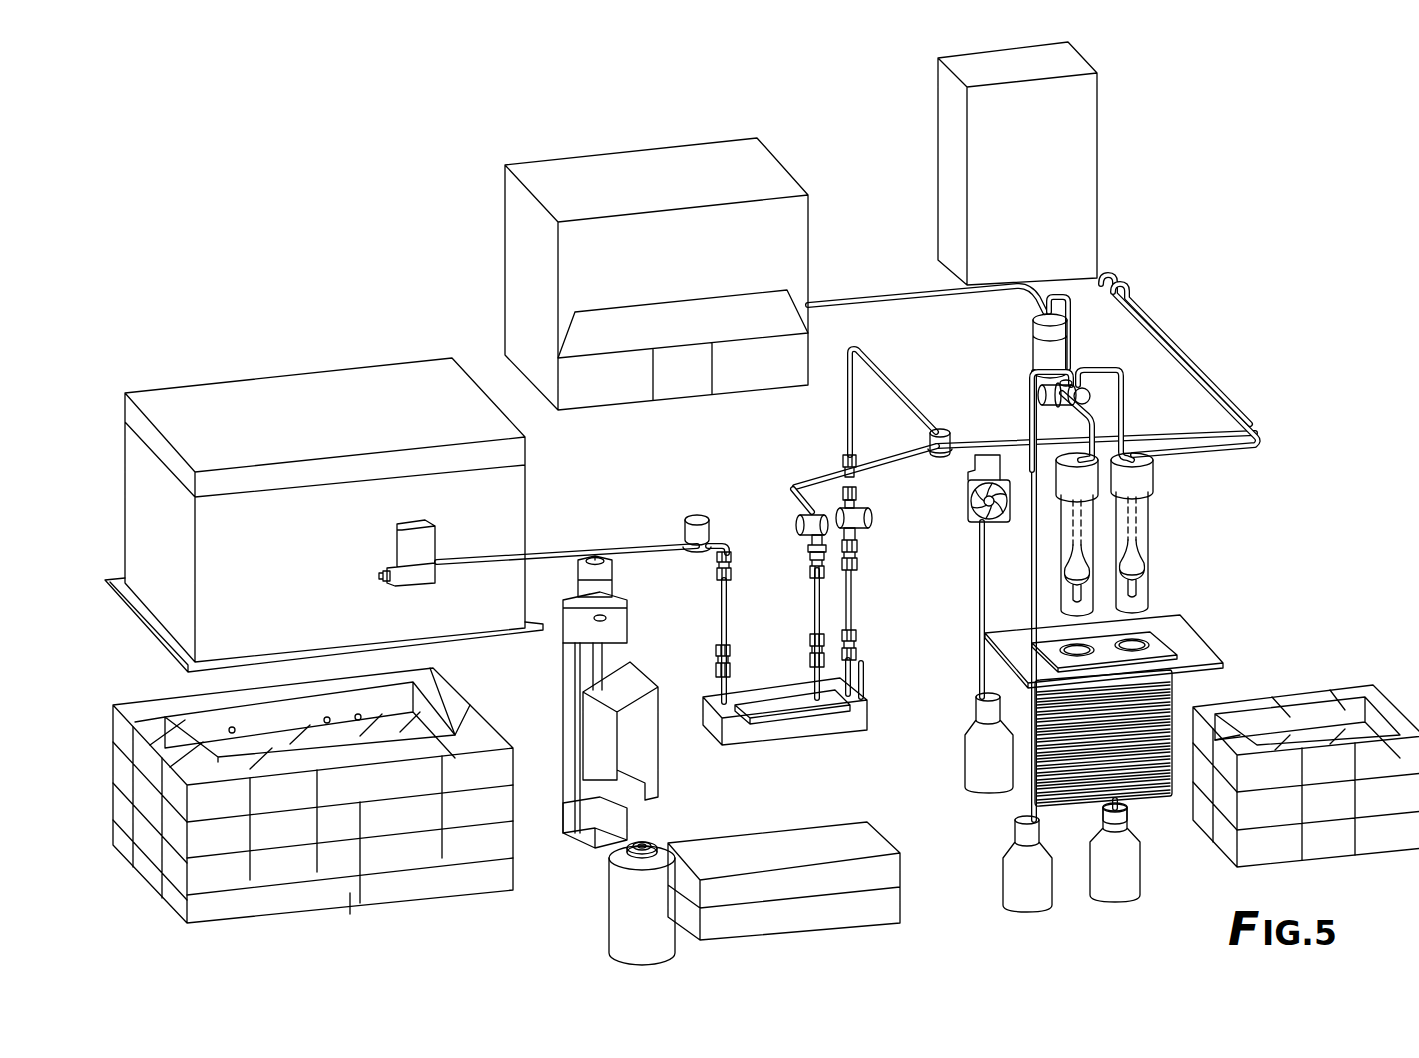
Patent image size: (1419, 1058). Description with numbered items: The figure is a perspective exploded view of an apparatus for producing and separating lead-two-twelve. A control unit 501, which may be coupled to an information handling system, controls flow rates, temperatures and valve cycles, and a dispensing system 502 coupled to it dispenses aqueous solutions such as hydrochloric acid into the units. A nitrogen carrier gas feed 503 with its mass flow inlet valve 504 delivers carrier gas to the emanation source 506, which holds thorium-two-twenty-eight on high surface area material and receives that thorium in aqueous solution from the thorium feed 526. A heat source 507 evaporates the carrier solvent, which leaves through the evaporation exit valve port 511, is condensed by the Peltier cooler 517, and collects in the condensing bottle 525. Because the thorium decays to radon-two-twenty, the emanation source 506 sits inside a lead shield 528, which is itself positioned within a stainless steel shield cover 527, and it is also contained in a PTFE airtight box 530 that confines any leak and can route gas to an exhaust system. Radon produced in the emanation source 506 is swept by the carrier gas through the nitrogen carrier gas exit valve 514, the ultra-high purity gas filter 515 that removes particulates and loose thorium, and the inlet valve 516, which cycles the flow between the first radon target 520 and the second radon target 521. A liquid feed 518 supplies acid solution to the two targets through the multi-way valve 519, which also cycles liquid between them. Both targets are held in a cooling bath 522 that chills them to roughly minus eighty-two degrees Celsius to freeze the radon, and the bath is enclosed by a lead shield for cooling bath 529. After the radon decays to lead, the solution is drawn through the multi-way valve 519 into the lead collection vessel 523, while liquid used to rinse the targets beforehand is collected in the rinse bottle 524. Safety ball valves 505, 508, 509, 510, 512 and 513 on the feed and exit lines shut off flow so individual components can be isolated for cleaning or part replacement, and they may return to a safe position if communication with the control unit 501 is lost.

The control unit 501 is at (522, 250).
The dispensing system 502 is at (1093, 95).
The N2 carrier gas feed 503 is at (430, 547).
The mass flow inlet valve 504 is at (685, 527).
The safety ball valve 505 is at (703, 572).
The emanation source 506 is at (778, 717).
The heat source 507 is at (777, 750).
The safety ball valve 508 is at (803, 645).
The safety ball valve 509 is at (807, 558).
The safety ball valve 510 is at (707, 655).
The evaporation exit valve port 511 is at (793, 537).
The safety ball valve 512 is at (833, 672).
The safety ball valve 513 is at (867, 567).
The N2 carrier gas exit valve 514 is at (860, 512).
The ultra-high purity gas filter 515 is at (837, 492).
The inlet valve 516 is at (953, 430).
The Peltier cooler 517 is at (965, 512).
The liquid feed 518 is at (1033, 367).
The multi-way valve 519 is at (1047, 410).
The Rn-220 target 520 is at (1095, 523).
The Rn-220 target 521 is at (1147, 560).
The cooling bath 522 is at (1177, 698).
The Pb-212 collection vessel 523 is at (1102, 883).
The rinse bottle 524 is at (1018, 895).
The condensing bottle 525 is at (983, 773).
The Th-228 feed 526 is at (642, 742).
The stainless steel shield cover 527 is at (240, 415).
The lead shield 528 is at (382, 860).
The lead shield for cooling bath 529 is at (1322, 812).
The PTFE airtight box 530 is at (813, 907).